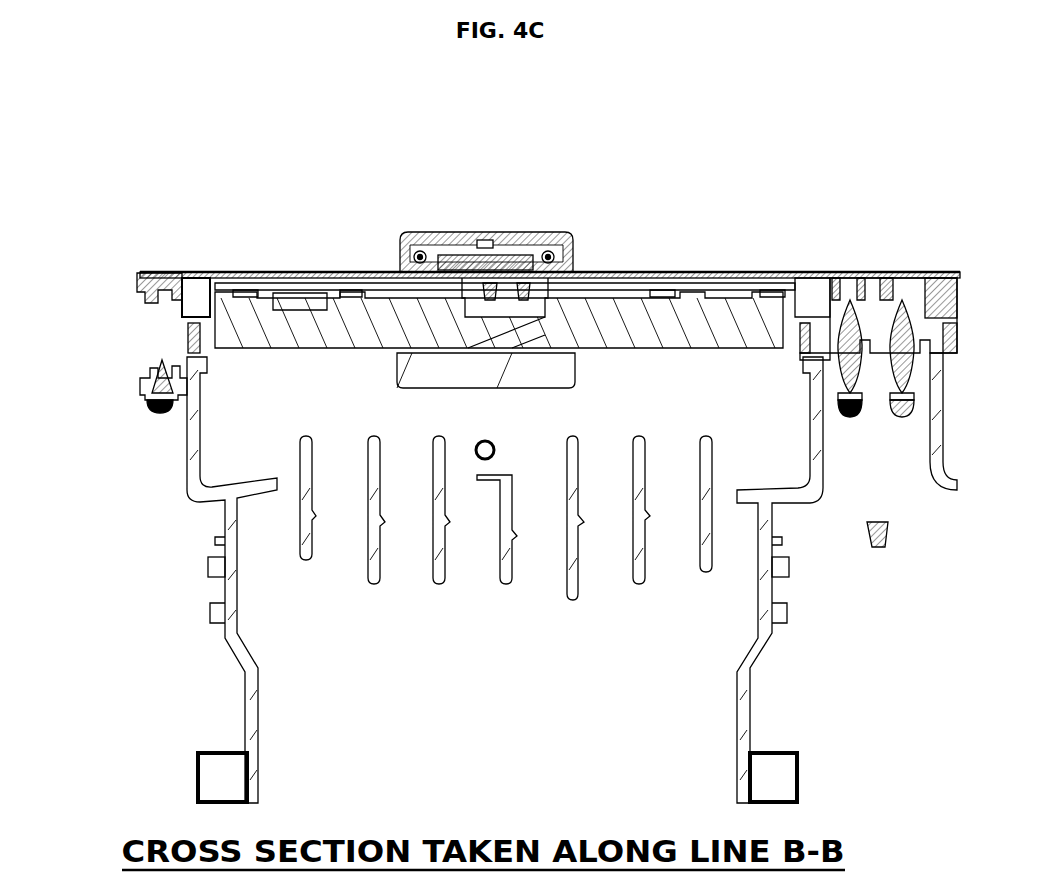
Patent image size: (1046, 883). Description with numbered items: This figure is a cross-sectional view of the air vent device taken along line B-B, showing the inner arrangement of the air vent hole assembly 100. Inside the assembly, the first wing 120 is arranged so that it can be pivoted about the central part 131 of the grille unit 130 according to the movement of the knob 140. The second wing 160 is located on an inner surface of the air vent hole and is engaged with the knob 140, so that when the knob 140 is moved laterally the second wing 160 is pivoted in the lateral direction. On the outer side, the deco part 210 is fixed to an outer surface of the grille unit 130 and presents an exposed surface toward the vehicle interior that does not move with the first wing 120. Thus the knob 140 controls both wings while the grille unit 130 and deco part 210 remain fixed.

The air vent hole assembly 100 is at (225, 603).
The first wing 120 is at (273, 333).
The grille unit 130 is at (195, 302).
The central part 131 is at (296, 282).
The knob 140 is at (487, 232).
The second wing 160 is at (715, 548).
The deco part 210 is at (867, 277).